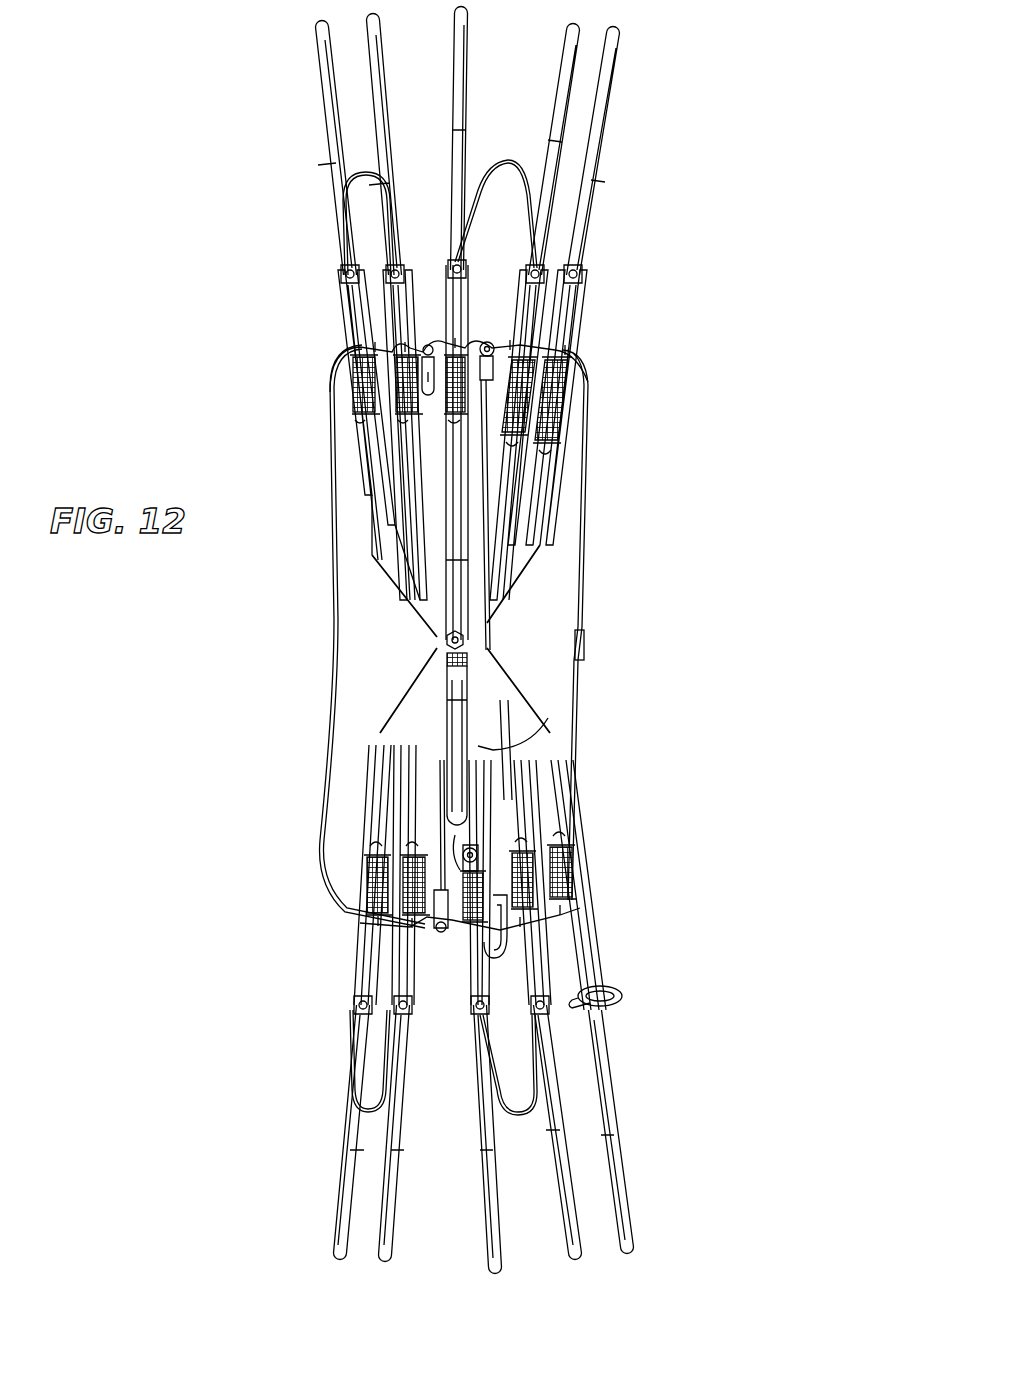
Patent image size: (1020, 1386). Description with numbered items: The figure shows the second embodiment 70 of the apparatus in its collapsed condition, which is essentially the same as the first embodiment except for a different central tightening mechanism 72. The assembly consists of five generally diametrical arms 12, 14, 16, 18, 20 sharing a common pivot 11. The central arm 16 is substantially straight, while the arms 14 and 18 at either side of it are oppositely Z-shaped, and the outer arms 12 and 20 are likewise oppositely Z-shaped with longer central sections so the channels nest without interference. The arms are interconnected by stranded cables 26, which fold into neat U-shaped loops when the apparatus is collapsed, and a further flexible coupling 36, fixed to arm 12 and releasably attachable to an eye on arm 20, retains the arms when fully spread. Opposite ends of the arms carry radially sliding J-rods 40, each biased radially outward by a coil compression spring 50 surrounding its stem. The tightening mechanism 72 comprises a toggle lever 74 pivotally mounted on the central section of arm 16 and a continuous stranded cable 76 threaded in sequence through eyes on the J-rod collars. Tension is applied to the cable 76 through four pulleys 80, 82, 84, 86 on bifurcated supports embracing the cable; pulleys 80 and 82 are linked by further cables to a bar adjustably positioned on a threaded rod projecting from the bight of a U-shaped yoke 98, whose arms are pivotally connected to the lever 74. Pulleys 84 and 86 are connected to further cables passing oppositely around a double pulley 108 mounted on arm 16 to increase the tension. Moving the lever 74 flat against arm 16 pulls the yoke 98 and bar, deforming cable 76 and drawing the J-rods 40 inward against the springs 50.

The common pivot 11 is at (470, 640).
The arm 12 is at (364, 493).
The arm 14 is at (419, 450).
The central arm 16 is at (451, 424).
The arm 18 is at (531, 321).
The arm 20 is at (586, 352).
The stranded cable 26 is at (510, 160).
The further flexible coupling 36 is at (612, 999).
The J-rod 40 is at (574, 87).
The coil compression spring 50 is at (568, 868).
The second embodiment 70 is at (325, 663).
The tightening mechanism 72 is at (436, 640).
The toggle lever 74 is at (458, 713).
The stranded cable 76 is at (588, 519).
The pulley 80 is at (437, 931).
The pulley 82 is at (505, 961).
The pulley 84 is at (428, 343).
The pulley 86 is at (487, 341).
The U-shaped yoke 98 is at (493, 750).
The double pulley 108 is at (471, 852).